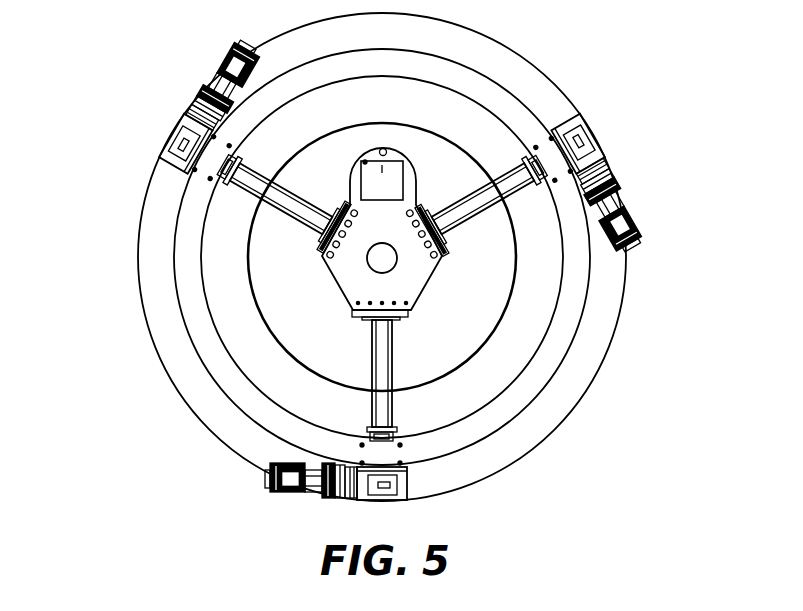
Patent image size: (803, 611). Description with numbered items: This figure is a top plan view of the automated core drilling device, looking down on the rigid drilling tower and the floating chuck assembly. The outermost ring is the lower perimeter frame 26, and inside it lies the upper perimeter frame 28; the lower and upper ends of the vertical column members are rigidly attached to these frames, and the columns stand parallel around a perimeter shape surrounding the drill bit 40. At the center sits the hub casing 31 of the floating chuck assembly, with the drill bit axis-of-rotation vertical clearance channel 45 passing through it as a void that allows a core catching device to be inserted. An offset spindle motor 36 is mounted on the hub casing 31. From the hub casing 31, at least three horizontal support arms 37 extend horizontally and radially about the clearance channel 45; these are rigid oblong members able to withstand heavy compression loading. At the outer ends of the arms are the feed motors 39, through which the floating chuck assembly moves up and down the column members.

The lower perimeter frame 26 is at (163, 342).
The upper perimeter frame 28 is at (188, 255).
The hub casing 31 is at (345, 273).
The offset spindle motor 36 is at (383, 149).
The horizontal support arm 37 is at (393, 397).
The feed motor 39 is at (236, 50).
The drill bit 40 is at (477, 320).
The drill bit axis-of-rotation vertical clearance channel 45 is at (387, 252).